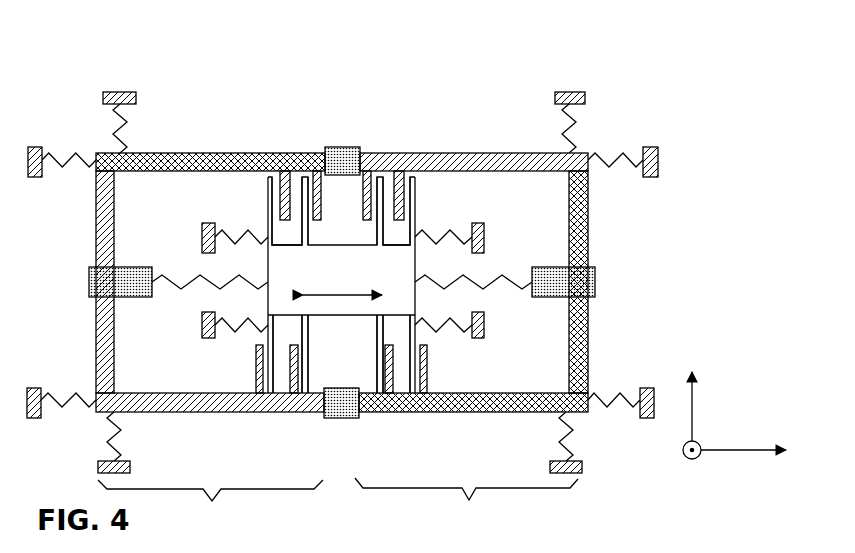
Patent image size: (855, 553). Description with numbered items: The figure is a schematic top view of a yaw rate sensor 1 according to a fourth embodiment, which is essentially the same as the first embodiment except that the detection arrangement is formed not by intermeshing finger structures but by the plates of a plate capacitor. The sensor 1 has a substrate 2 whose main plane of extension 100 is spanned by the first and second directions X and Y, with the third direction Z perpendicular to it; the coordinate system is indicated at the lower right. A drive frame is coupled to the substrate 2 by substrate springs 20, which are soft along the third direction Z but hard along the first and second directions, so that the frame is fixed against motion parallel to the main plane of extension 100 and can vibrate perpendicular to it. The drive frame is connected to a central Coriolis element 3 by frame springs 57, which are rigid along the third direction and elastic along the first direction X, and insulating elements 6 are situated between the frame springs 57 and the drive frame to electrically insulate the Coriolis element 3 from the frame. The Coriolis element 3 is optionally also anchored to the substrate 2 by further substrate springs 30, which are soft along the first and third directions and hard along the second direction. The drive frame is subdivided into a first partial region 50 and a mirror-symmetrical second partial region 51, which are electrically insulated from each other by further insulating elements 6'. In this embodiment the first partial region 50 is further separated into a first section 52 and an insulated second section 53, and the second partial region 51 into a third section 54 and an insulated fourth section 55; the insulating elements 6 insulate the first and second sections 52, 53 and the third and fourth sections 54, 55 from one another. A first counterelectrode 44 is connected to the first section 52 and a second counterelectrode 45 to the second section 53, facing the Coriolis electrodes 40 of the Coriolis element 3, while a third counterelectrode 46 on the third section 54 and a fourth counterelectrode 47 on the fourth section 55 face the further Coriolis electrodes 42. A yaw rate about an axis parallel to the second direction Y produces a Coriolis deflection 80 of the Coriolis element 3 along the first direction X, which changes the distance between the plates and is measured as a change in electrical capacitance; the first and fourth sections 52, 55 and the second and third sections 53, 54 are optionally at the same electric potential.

The yaw rate sensor 1 is at (650, 107).
The substrate 2 is at (706, 261).
The Coriolis element 3 is at (306, 278).
The insulating elements 6 is at (343, 282).
The further insulating elements 6' is at (342, 239).
The substrate springs 20 is at (622, 406).
The further substrate springs 30 is at (455, 235).
The Coriolis electrodes 40 is at (273, 180).
The further Coriolis electrodes 42 is at (409, 180).
The first counterelectrode 44 is at (281, 180).
The second counterelectrode 45 is at (263, 372).
The third counterelectrode 46 is at (364, 180).
The fourth counterelectrode 47 is at (418, 372).
The first partial region 50 is at (210, 505).
The second partial region 51 is at (466, 504).
The first section 52 is at (199, 153).
The second section 53 is at (104, 348).
The third section 54 is at (490, 155).
The fourth section 55 is at (590, 346).
The frame springs 57 is at (514, 292).
The Coriolis deflection 80 is at (345, 288).
The main plane of extension 100 is at (762, 418).